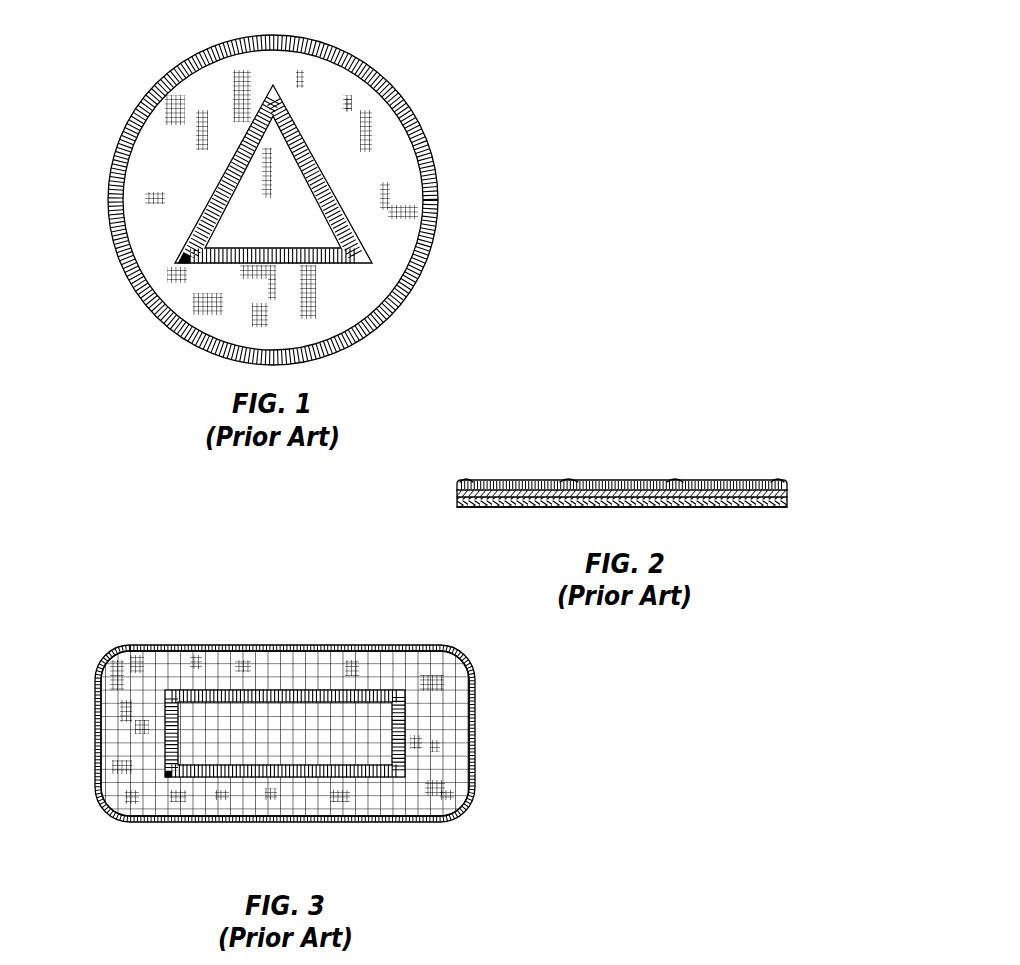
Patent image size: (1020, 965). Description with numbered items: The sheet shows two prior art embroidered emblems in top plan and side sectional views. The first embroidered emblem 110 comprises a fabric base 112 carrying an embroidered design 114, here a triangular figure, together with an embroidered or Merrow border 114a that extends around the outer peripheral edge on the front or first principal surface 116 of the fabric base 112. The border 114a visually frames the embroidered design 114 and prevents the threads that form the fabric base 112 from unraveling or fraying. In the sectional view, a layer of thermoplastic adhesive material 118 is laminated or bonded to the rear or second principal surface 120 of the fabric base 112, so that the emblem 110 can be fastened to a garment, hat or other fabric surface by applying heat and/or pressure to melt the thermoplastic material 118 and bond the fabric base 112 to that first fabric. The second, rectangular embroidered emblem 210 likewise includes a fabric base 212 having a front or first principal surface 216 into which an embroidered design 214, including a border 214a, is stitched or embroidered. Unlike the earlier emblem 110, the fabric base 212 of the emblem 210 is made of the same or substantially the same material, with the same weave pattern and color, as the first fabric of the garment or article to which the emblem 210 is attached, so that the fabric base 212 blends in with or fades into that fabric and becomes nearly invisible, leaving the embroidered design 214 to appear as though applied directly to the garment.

In FIG. 1, the embroidered emblem 110 is at (162, 47).
In FIG. 2, the embroidered emblem 110 is at (529, 446).
In FIG. 1, the fabric base 112 is at (356, 120).
In FIG. 2, the fabric base 112 is at (790, 491).
In FIG. 1, the embroidered design 114 is at (203, 254).
In FIG. 2, the embroidered design 114 is at (605, 480).
In FIG. 1, the embroidered or Merrow border 114a is at (118, 253).
In FIG. 2, the embroidered or Merrow border 114a is at (512, 481).
In FIG. 1, the front or first principal surface 116 is at (393, 150).
In FIG. 2, the front or first principal surface 116 is at (773, 451).
In FIG. 2, the thermoplastic adhesive material 118 is at (790, 503).
In FIG. 2, the rear or second principal surface 120 is at (690, 500).
In FIG. 3, the embroidered emblem 210 is at (160, 622).
In FIG. 3, the fabric base 212 is at (305, 668).
In FIG. 3, the embroidered design 214 is at (290, 772).
In FIG. 3, the border 214a is at (329, 822).
In FIG. 3, the front or first principal surface 216 is at (328, 672).